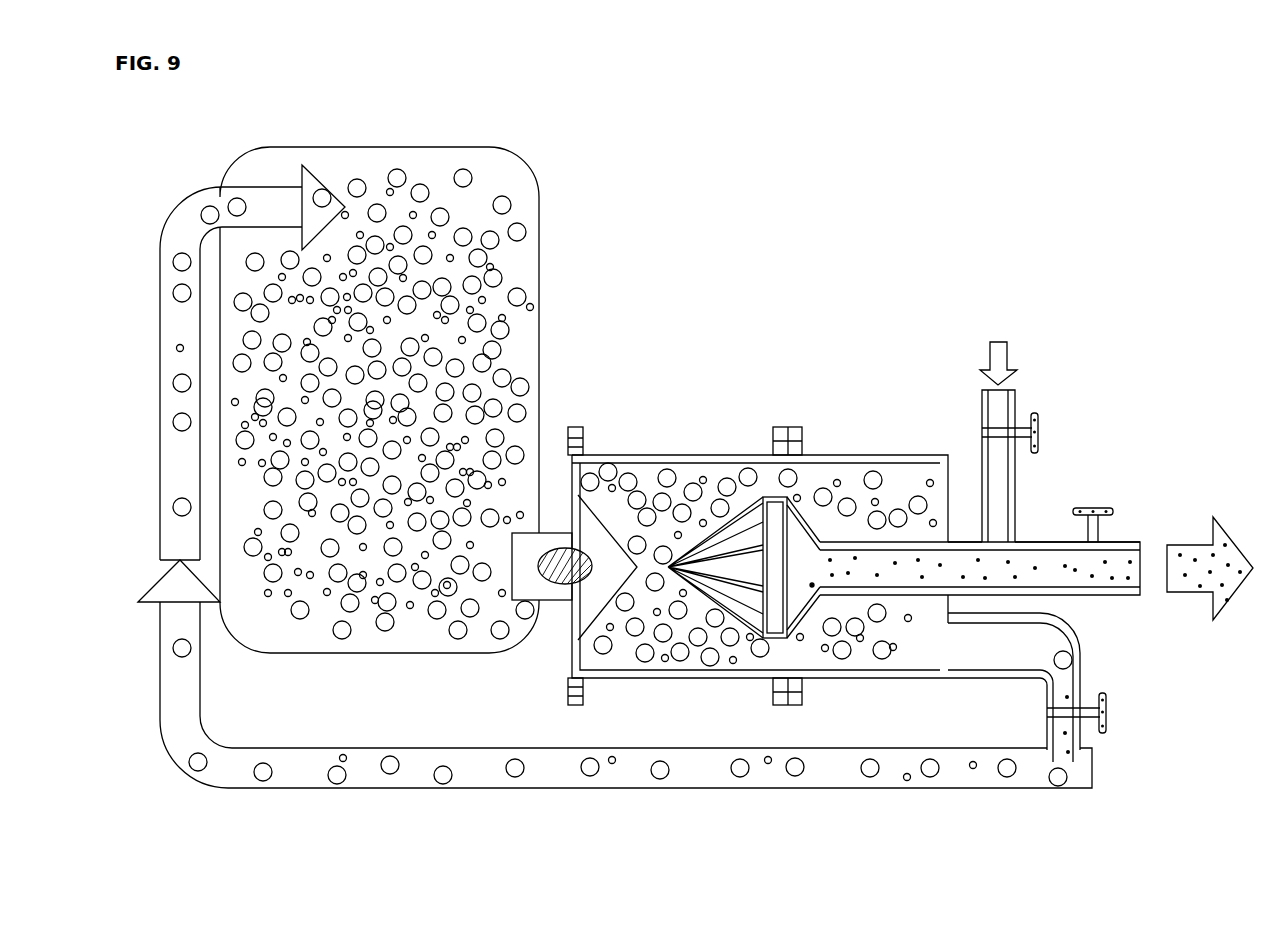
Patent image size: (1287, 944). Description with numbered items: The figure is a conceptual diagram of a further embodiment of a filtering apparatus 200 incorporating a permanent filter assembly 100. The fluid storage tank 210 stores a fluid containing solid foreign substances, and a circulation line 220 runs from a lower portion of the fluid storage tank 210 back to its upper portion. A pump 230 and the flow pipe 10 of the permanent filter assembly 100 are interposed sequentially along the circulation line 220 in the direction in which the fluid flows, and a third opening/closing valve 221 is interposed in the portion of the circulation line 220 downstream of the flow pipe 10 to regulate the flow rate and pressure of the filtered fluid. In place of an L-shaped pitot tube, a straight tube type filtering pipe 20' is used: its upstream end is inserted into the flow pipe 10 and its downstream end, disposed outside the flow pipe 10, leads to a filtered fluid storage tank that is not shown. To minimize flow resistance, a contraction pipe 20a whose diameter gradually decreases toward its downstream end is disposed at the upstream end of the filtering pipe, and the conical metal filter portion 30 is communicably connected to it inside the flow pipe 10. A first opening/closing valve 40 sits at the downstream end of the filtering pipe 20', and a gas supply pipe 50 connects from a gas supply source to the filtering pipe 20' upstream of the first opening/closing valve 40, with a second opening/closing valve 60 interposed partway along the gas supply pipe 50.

The filtering apparatus 200 is at (882, 212).
The fluid storage tank 210 is at (539, 280).
The circulation line 220 is at (1080, 657).
The third opening/closing valve 221 is at (1107, 710).
The pump 230 is at (565, 545).
The flow pipe 10 is at (857, 673).
The contraction pipe 20a is at (813, 600).
The straight tube type filtering pipe 20' is at (980, 708).
The conical metal filter portion 30 is at (743, 640).
The first opening/closing valve 40 is at (1093, 508).
The gas supply pipe 50 is at (982, 400).
The second opening/closing valve 60 is at (1035, 410).
The permanent filter assembly 100 is at (1025, 533).